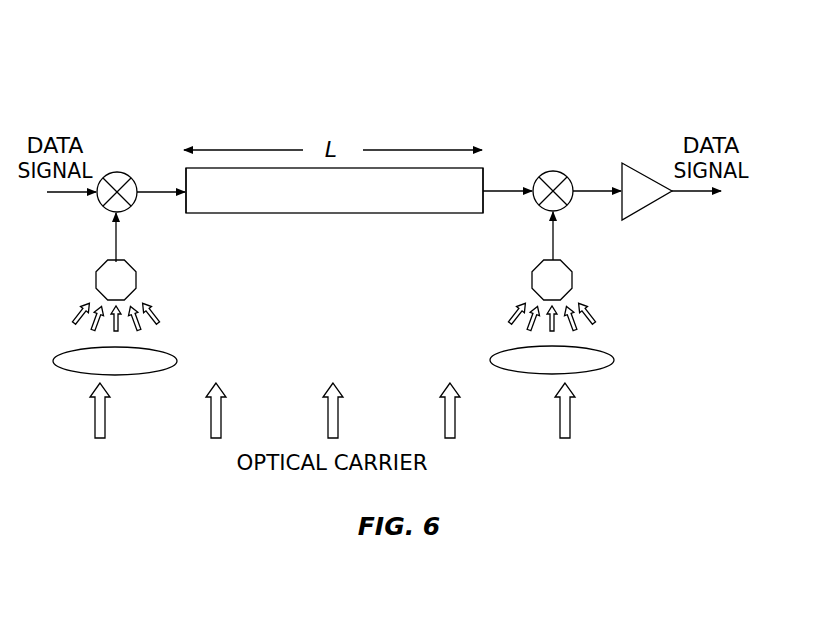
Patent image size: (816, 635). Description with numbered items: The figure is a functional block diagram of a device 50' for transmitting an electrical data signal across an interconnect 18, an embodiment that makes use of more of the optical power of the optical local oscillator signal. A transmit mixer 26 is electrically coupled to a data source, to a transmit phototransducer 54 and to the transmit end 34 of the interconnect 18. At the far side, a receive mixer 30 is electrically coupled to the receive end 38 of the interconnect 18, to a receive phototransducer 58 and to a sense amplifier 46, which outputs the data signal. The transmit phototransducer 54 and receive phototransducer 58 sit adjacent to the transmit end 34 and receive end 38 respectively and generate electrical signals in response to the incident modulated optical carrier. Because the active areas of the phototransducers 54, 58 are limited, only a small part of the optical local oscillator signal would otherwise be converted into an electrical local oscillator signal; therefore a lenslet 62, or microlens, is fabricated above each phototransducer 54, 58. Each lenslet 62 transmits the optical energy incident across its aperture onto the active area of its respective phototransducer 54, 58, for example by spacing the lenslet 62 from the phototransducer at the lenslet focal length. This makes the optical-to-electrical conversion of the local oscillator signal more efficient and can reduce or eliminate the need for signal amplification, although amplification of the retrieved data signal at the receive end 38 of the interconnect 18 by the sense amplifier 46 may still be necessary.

The device 50' is at (115, 44).
The interconnect 18 is at (334, 190).
The transmit end 34 is at (183, 175).
The receive end 38 is at (486, 177).
The transmit mixer 26 is at (124, 213).
The receive mixer 30 is at (544, 212).
The sense amplifier 46 is at (652, 208).
The transmit phototransducer 54 is at (137, 275).
The receive phototransducer 58 is at (572, 274).
The lenslet 62 is at (178, 361).